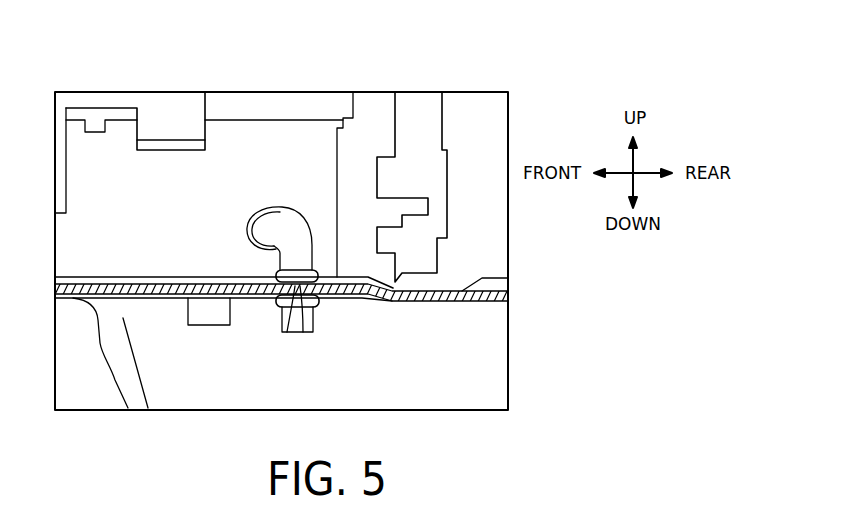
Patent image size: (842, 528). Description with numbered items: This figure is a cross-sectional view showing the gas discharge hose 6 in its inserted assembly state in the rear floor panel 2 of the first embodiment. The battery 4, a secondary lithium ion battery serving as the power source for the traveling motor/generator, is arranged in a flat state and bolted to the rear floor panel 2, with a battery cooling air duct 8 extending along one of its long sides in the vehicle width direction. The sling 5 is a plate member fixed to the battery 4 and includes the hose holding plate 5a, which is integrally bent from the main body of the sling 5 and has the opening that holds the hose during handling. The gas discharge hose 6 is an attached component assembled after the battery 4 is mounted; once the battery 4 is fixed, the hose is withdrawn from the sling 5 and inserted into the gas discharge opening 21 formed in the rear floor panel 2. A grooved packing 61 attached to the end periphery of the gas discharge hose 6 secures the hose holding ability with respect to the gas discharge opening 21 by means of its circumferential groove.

The rear floor panel 2 is at (508, 278).
The battery 4 is at (230, 150).
The sling 5 is at (163, 120).
The hose holding plate 5a is at (162, 152).
The gas discharge hose 6 is at (300, 213).
The battery cooling air duct 8 is at (413, 122).
The gas discharge opening 21 is at (282, 332).
The grooved packing 61 is at (307, 332).